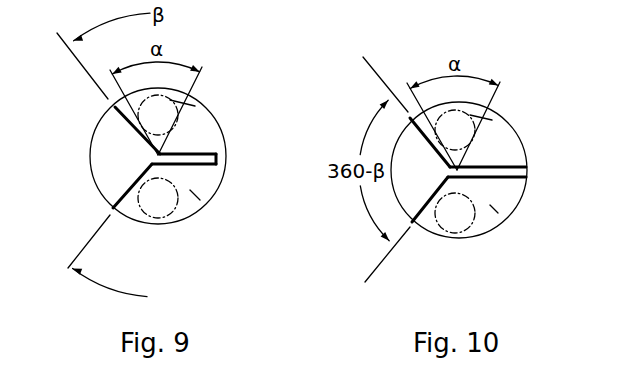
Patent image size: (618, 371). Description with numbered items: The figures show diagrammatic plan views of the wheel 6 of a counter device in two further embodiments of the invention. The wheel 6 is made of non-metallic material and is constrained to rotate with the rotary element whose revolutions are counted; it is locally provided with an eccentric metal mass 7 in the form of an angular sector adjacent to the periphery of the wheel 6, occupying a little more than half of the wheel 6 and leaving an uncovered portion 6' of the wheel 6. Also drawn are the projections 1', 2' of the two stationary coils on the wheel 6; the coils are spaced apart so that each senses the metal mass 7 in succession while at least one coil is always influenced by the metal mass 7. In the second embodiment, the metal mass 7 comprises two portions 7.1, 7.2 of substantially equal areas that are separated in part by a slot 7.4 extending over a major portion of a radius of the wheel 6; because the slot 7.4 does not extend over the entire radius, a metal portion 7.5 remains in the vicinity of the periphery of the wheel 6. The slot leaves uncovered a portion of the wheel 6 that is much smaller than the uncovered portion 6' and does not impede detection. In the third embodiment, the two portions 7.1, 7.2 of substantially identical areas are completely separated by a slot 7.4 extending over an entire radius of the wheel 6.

In FIG. 9, the projection of the first coil 1' is at (200, 110).
In FIG. 10, the projection of the first coil 1' is at (501, 125).
In FIG. 9, the projection of the second coil 2' is at (182, 224).
In FIG. 10, the projection of the second coil 2' is at (480, 238).
In FIG. 9, the wheel 6 is at (101, 196).
In FIG. 10, the wheel 6 is at (394, 215).
In FIG. 9, the uncovered portion of the wheel 6' is at (106, 130).
In FIG. 10, the uncovered portion of the wheel 6' is at (394, 130).
In FIG. 9, the metal mass 7 is at (213, 137).
In FIG. 10, the metal mass 7 is at (536, 155).
In FIG. 9, the first portion of the metal mass 7.1 is at (193, 105).
In FIG. 10, the first portion of the metal mass 7.1 is at (492, 120).
In FIG. 9, the second portion of the metal mass 7.2 is at (200, 200).
In FIG. 10, the second portion of the metal mass 7.2 is at (498, 213).
In FIG. 9, the slot 7.4 is at (194, 157).
In FIG. 10, the slot 7.4 is at (493, 174).
In FIG. 9, the metal portion 7.5 is at (220, 155).